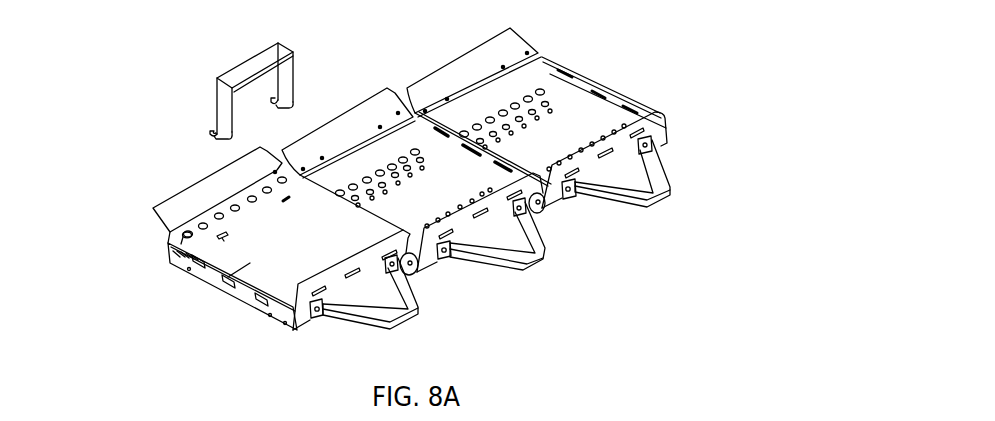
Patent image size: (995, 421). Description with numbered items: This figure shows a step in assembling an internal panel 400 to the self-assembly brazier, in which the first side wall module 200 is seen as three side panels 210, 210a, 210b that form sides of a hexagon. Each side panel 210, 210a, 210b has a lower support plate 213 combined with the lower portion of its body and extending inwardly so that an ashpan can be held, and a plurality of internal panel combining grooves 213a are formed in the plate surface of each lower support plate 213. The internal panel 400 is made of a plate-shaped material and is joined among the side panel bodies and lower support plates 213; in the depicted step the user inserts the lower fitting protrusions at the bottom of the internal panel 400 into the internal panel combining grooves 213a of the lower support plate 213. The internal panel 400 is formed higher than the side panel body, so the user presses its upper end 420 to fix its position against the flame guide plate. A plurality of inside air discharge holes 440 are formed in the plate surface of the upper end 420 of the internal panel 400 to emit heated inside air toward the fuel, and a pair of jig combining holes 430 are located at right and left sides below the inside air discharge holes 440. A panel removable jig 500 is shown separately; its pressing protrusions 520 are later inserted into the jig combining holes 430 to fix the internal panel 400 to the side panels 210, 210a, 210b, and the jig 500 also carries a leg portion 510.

The first side wall module 200 is at (146, 218).
The side panel 210 is at (275, 261).
The side panel 210a is at (447, 128).
The side panel 210b is at (572, 120).
The lower support plate 213 is at (358, 287).
The internal panel combining groove 213a is at (340, 272).
The internal panel 400 is at (228, 280).
The upper end 420 is at (195, 218).
The jig combining hole 430 is at (216, 243).
The inside air discharge hole 440 is at (182, 238).
The panel removable jig 500 is at (211, 78).
The clip leg 510 is at (181, 110).
The pressing protrusion 520 is at (210, 137).